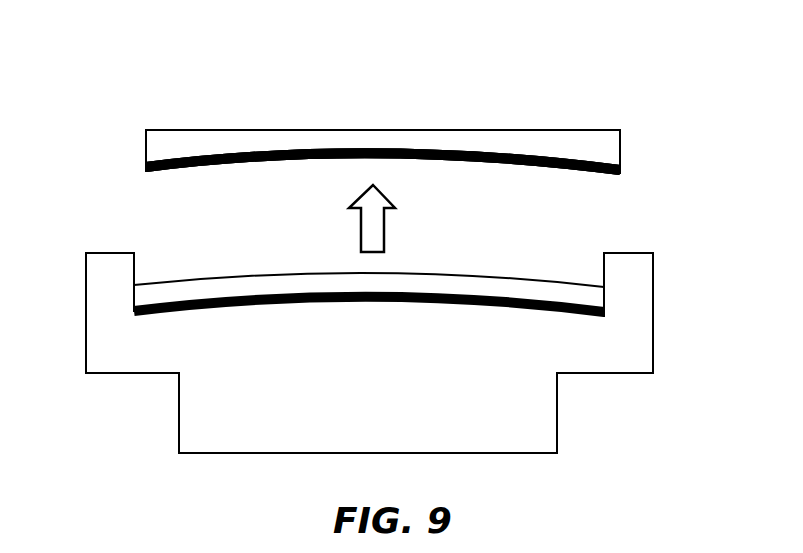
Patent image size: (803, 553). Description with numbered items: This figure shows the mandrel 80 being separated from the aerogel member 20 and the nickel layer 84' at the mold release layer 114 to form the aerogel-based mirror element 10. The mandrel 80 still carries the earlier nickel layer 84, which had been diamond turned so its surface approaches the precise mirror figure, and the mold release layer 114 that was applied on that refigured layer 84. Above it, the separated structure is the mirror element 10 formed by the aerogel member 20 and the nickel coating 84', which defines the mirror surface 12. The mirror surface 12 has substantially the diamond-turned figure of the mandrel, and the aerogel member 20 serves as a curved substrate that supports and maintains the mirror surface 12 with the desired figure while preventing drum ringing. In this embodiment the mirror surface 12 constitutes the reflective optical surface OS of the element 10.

The aerogel-based mirror element 10 is at (590, 78).
The aerogel member 20 is at (172, 147).
The mirror surface 12 is at (440, 172).
The nickel layer 84' is at (328, 152).
The reflective optical surface OS is at (285, 172).
The mandrel 80 is at (605, 414).
The mold release layer 114 is at (575, 295).
The nickel layer 84 is at (326, 256).